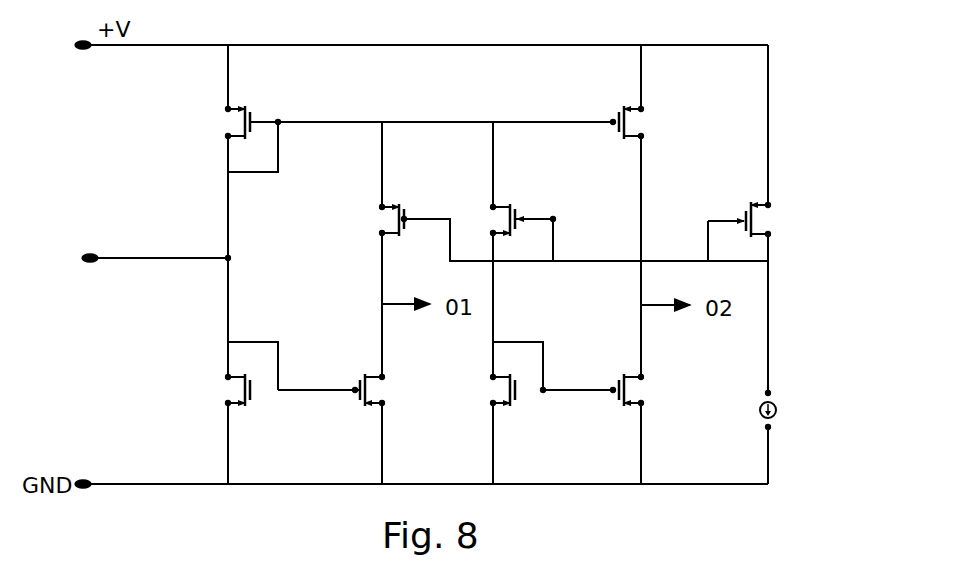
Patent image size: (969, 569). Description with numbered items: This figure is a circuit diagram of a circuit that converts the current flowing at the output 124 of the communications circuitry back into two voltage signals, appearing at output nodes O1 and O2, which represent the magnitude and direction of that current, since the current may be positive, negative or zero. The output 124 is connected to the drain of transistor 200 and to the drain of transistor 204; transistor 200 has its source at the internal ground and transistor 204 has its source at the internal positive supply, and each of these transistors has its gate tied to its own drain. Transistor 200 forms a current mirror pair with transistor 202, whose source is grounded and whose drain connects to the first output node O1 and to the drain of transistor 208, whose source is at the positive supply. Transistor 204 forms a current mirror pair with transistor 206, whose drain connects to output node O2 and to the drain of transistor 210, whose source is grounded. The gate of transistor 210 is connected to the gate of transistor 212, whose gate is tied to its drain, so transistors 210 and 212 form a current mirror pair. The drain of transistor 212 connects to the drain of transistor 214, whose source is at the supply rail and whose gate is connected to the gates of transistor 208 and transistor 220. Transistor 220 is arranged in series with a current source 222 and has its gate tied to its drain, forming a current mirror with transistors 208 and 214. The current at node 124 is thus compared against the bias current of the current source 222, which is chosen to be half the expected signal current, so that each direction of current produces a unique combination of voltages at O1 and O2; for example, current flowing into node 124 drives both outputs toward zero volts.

The output 124 is at (155, 258).
The transistor 200 is at (218, 391).
The transistor 202 is at (391, 391).
The transistor 204 is at (218, 121).
The transistor 206 is at (652, 121).
The transistor 208 is at (374, 220).
The transistor 210 is at (649, 391).
The transistor 212 is at (484, 391).
The transistor 214 is at (486, 219).
The transistor 220 is at (775, 220).
The current source 222 is at (777, 412).